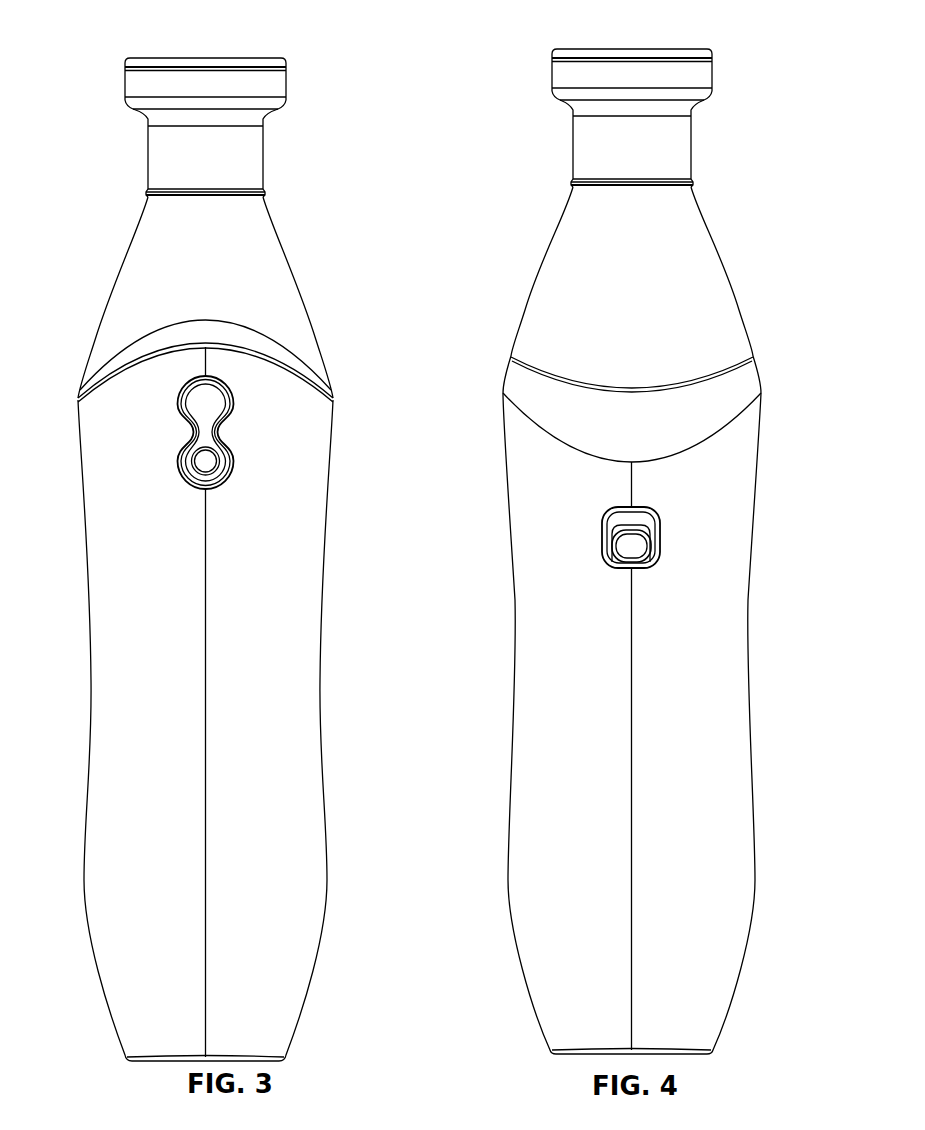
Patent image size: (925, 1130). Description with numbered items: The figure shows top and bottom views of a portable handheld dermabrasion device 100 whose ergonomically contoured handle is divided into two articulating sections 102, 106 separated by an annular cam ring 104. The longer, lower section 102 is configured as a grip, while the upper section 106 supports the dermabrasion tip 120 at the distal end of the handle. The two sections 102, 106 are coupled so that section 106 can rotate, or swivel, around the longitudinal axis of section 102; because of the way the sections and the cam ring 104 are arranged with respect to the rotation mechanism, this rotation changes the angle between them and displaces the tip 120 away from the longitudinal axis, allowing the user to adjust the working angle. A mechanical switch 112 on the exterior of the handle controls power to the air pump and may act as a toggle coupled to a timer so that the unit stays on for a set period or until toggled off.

In FIG. 3, the portable handheld dermabrasion device 100 is at (117, 42).
In FIG. 4, the portable handheld dermabrasion device 100 is at (509, 34).
In FIG. 3, the articulating section 102 is at (313, 549).
In FIG. 4, the articulating section 102 is at (740, 579).
In FIG. 3, the annular cam ring 104 is at (205, 361).
In FIG. 4, the annular cam ring 104 is at (750, 384).
In FIG. 3, the articulating section 106 is at (205, 297).
In FIG. 4, the articulating section 106 is at (717, 281).
In FIG. 4, the mechanical switch 112 is at (660, 535).
In FIG. 3, the tip 120 is at (205, 127).
In FIG. 4, the tip 120 is at (700, 76).